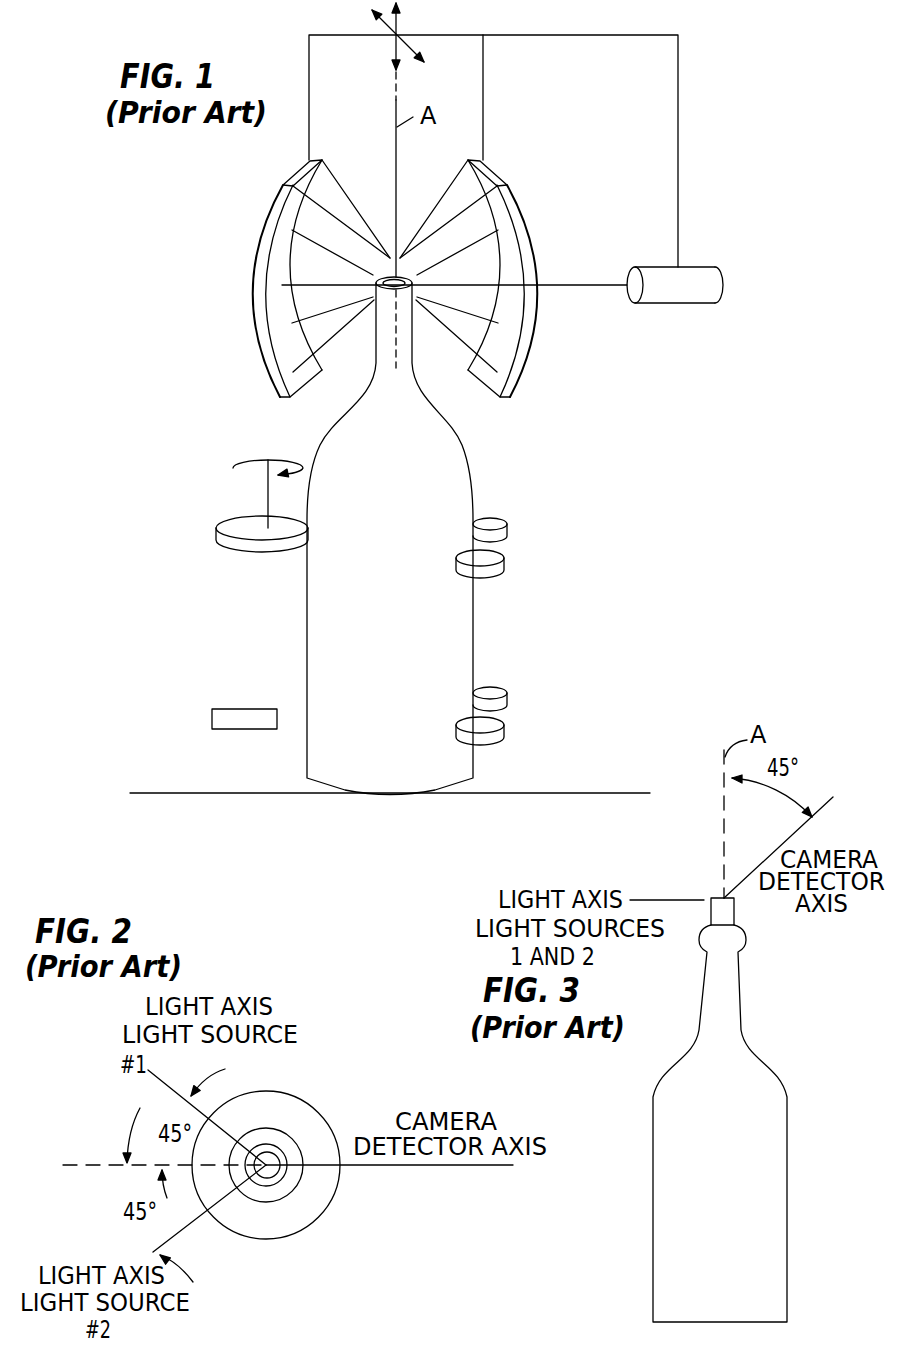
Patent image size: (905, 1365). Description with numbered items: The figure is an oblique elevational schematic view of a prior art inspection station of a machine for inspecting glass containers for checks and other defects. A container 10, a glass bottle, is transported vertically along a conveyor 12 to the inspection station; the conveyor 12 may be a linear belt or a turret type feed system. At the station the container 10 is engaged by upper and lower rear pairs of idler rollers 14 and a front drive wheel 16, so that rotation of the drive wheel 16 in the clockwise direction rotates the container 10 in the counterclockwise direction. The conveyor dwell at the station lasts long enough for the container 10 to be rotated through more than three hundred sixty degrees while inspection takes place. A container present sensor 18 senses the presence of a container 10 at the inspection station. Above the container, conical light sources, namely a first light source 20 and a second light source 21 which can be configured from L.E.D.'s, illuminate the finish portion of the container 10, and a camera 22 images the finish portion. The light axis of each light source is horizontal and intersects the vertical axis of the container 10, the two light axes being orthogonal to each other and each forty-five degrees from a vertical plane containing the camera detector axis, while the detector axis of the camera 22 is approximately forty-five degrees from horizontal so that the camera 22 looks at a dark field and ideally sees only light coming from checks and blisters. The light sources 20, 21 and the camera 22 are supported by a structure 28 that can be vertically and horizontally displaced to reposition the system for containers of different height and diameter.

The container 10 is at (465, 466).
The conveyor 12 is at (520, 795).
The idler rollers 14 is at (503, 565).
The drive wheel 16 is at (263, 552).
The container present sensor 18 is at (255, 718).
The light source 20 is at (265, 353).
The light source 21 is at (520, 218).
The camera 22 is at (660, 292).
The structure 28 is at (563, 35).